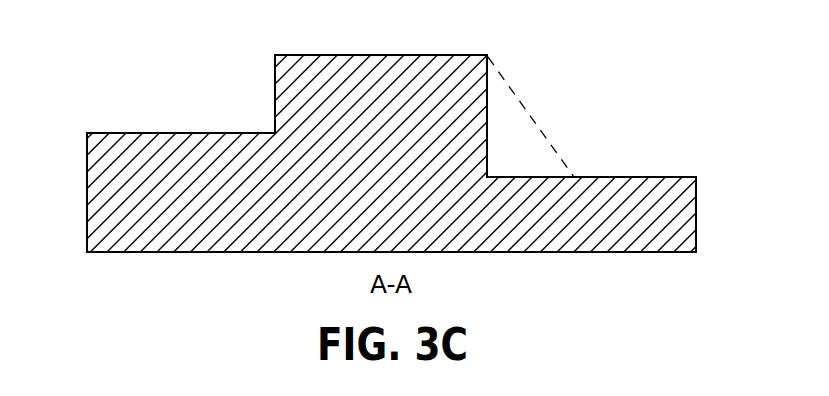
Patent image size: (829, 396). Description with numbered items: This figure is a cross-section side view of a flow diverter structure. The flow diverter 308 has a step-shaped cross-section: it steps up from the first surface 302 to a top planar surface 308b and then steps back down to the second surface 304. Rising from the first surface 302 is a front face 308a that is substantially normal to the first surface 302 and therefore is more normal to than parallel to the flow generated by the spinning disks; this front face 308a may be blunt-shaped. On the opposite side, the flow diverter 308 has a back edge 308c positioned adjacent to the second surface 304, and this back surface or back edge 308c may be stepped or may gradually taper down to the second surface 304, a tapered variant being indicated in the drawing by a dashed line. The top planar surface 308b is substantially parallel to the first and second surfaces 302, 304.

The first surface 302 is at (172, 133).
The second surface 304 is at (628, 177).
The flow diverter 308 is at (443, 61).
The front face 308a is at (275, 88).
The top planar surface 308b is at (380, 55).
The back edge 308c is at (487, 115).